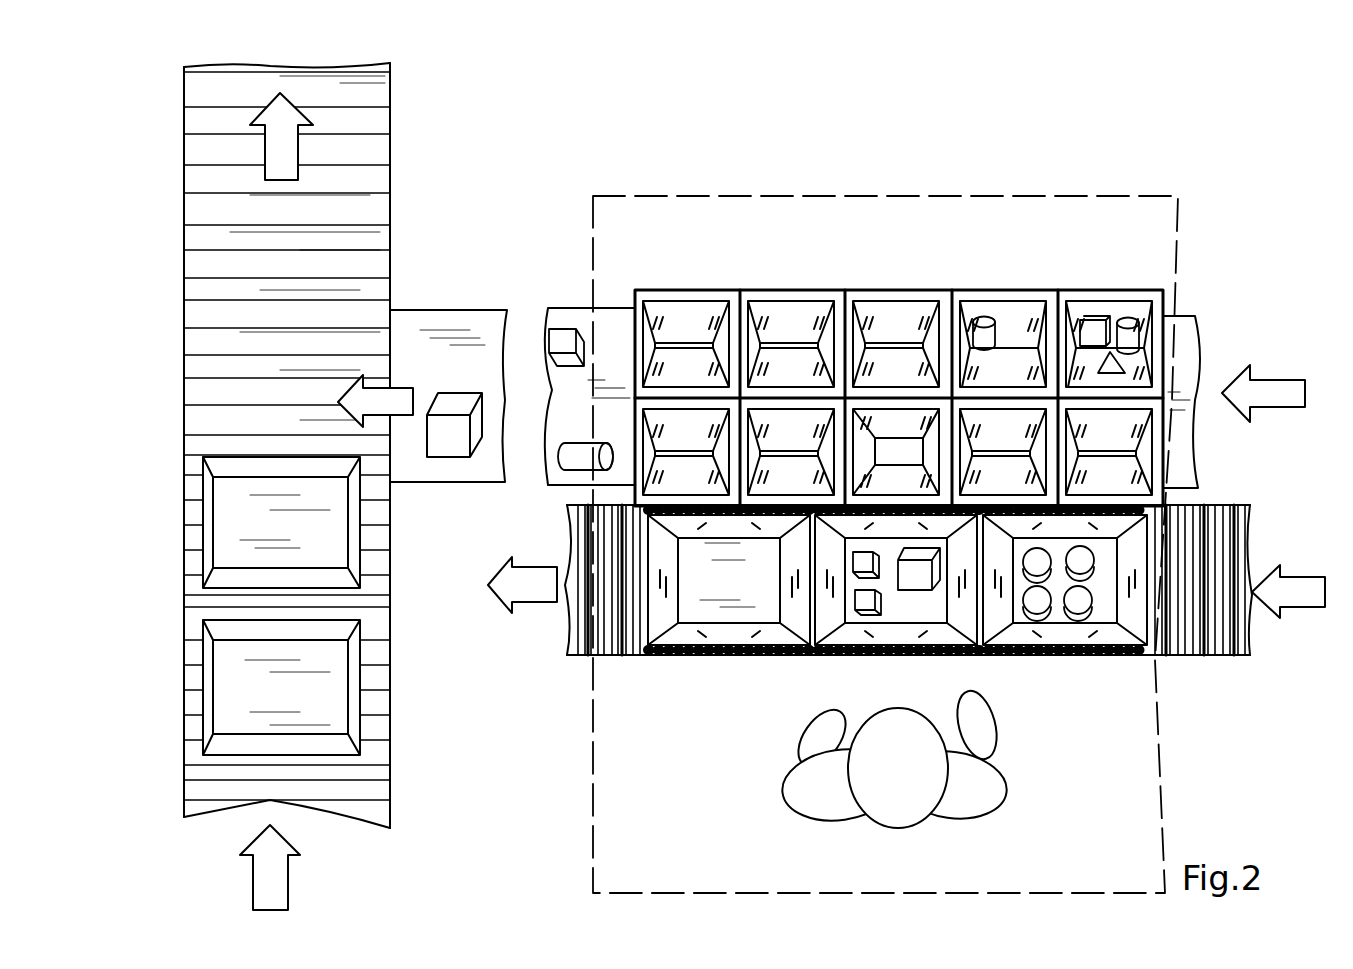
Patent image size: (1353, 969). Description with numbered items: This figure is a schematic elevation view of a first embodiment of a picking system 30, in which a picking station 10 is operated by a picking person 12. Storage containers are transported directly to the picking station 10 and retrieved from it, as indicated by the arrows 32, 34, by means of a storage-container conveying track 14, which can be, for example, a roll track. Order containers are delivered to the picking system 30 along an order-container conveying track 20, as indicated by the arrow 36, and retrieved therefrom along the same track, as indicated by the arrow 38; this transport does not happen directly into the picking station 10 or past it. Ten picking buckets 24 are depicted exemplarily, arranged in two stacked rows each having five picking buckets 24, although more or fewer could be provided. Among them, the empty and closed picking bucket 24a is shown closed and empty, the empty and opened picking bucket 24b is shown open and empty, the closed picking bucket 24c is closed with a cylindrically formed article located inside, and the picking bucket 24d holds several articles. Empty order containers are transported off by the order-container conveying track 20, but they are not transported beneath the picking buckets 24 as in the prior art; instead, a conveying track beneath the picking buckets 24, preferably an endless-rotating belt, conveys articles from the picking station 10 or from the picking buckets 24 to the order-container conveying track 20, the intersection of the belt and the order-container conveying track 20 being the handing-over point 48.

The picking station 10 is at (593, 876).
The picking person 12 is at (955, 782).
The storage-container conveying track 14 is at (1200, 658).
The order-container conveying track 20 is at (387, 788).
The picking buckets 24 is at (968, 311).
The empty and closed picking bucket 24a is at (793, 337).
The empty and opened picking bucket 24b is at (898, 455).
The closed picking bucket 24c is at (1015, 337).
The picking bucket 24d is at (1142, 345).
The picking system 30 is at (167, 187).
The arrow 32 is at (1290, 592).
The arrow 34 is at (530, 597).
The arrow 36 is at (280, 878).
The arrow 38 is at (270, 164).
The handing-over point 48 is at (403, 290).